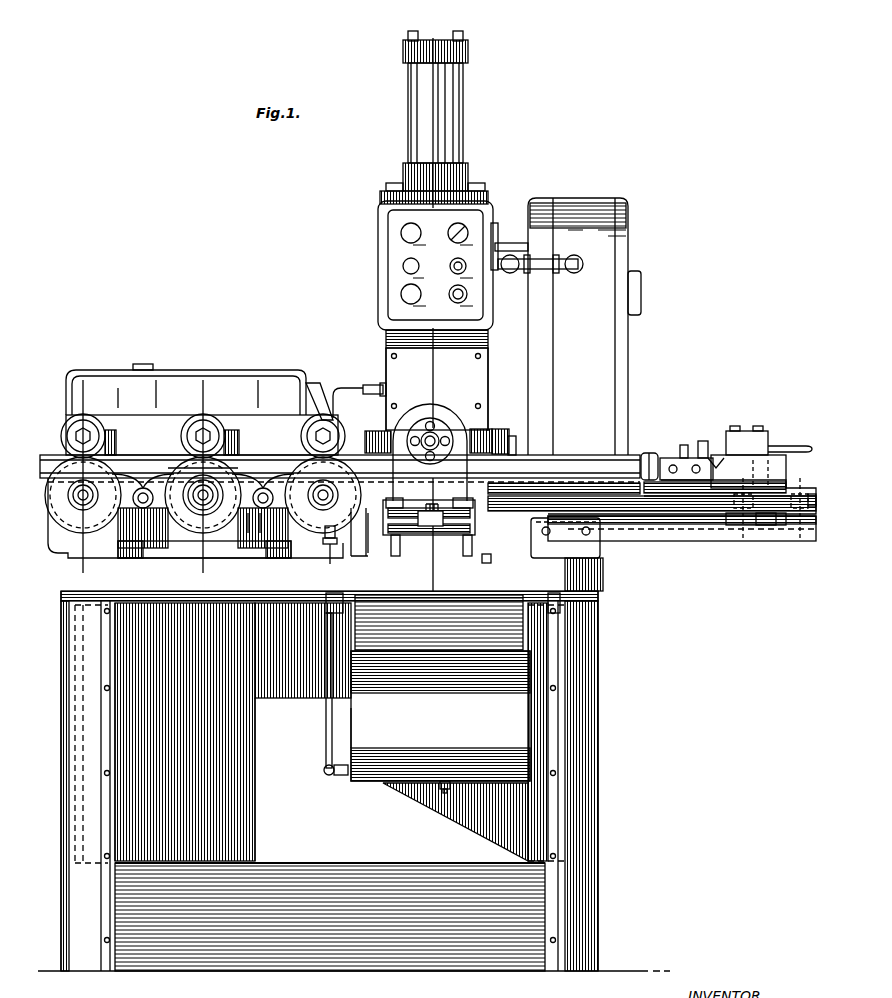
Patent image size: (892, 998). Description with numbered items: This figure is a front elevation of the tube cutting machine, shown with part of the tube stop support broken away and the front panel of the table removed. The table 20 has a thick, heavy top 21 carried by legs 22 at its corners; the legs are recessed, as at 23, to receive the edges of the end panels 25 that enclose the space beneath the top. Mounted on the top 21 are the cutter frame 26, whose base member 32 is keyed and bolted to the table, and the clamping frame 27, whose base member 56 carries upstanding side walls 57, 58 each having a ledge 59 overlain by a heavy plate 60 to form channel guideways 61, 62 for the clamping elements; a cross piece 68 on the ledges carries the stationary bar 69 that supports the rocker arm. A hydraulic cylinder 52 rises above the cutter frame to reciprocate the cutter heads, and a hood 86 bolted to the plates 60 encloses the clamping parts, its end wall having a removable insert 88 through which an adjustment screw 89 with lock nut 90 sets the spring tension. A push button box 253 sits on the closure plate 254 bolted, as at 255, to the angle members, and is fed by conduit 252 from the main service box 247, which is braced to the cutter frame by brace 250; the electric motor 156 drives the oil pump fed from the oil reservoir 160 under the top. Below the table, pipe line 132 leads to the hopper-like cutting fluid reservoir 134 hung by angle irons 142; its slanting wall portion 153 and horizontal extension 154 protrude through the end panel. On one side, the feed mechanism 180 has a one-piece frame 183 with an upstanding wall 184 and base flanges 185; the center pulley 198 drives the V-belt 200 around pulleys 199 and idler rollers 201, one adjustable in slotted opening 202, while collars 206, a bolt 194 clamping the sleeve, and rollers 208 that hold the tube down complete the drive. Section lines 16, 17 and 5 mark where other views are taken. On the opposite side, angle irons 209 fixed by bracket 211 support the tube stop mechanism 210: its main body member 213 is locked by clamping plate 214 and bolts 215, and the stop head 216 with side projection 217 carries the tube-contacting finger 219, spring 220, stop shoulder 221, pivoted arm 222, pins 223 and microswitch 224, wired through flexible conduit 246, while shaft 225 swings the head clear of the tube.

The section line 5 is at (442, 170).
The hydraulic cylinder 52 is at (418, 105).
The push button box 253 is at (385, 253).
The closure plate 254 is at (385, 332).
The bolts 255 is at (470, 349).
The brace 250 is at (500, 230).
The conduit 252 is at (533, 265).
The main service box 247 is at (605, 242).
The hood 86 is at (402, 410).
The adjustment screw 89 is at (438, 418).
The lock nut 90 is at (418, 424).
The removable insert 88 is at (430, 428).
The heavy plate 60 is at (368, 468).
The cutter frame 26 is at (489, 418).
The base member 32 is at (502, 438).
The shaft 225 is at (570, 490).
The electric motor 156 is at (222, 375).
The one-piece frame 183 is at (117, 418).
The feed mechanism 180 is at (158, 393).
The upstanding wall 184 is at (256, 405).
The rollers 208 is at (66, 415).
The section line 17 is at (86, 393).
The section line 16 is at (206, 393).
The pulleys 199 is at (60, 506).
The bolt 194 is at (180, 476).
The idler rollers 201 is at (134, 478).
The pulley 198 is at (212, 462).
The collars 206 is at (176, 522).
The base flanges 185 is at (126, 540).
The V-belt 200 is at (240, 512).
The slotted opening 202 is at (256, 506).
The side wall 58 is at (344, 548).
The clamping frame 27 is at (362, 552).
The pipe line 132 is at (333, 383).
The angle irons 142 is at (328, 570).
The base member 56 is at (448, 548).
The channel guideway 61 is at (390, 490).
The channel guideway 62 is at (455, 490).
The cross piece 68 is at (413, 520).
The bar 69 is at (428, 520).
The ledge 59 is at (389, 548).
The side wall 57 is at (480, 520).
The tube-contacting finger 219 is at (643, 452).
The pins 223 is at (672, 450).
The arm 222 is at (676, 437).
The stop shoulder 221 is at (700, 450).
The spring 220 is at (706, 447).
The microswitch 224 is at (742, 440).
The stop head 216 is at (750, 452).
The flexible conduit 246 is at (785, 438).
The main body member 213 is at (775, 476).
The angle irons 209 is at (690, 522).
The bolts 215 is at (735, 502).
The side projection 217 is at (690, 500).
The tube stop mechanism 210 is at (740, 500).
The clamping plate 214 is at (758, 527).
The bracket 211 is at (580, 535).
The top 21 is at (596, 572).
The table 20 is at (596, 636).
The legs 22 is at (582, 882).
The recesses 23 is at (95, 785).
The oil reservoir 160 is at (522, 808).
The end panels 25 is at (295, 952).
The horizontal extension 154 is at (390, 645).
The slanting wall portion 153 is at (462, 665).
The cutting fluid reservoir 134 is at (372, 722).